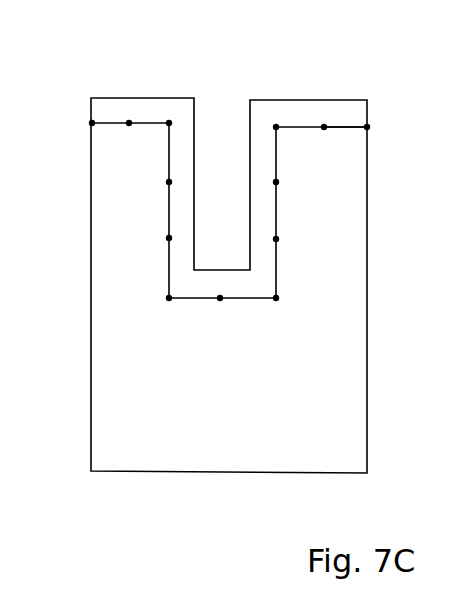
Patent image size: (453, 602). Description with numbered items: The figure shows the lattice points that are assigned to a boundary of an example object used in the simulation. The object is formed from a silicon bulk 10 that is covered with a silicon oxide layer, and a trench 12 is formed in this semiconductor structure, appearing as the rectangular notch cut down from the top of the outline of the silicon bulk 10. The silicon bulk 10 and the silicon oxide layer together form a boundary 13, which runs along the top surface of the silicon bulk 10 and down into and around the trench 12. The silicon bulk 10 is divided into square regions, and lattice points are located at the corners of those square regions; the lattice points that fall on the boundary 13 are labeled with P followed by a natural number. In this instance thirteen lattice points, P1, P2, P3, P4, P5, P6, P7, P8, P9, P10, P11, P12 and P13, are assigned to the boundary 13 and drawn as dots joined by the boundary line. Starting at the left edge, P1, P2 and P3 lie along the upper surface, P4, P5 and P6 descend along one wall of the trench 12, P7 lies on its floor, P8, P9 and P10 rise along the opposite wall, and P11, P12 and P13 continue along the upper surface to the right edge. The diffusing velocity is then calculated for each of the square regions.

The silicon bulk 10 is at (86, 415).
The trench 12 is at (354, 112).
The boundary 13 is at (342, 130).
The lattice point P1 is at (105, 138).
The lattice point P2 is at (130, 113).
The lattice point P3 is at (155, 138).
The lattice point P4 is at (152, 188).
The lattice point P5 is at (151, 245).
The lattice point P6 is at (151, 306).
The lattice point P7 is at (220, 311).
The lattice point P8 is at (292, 306).
The lattice point P9 is at (292, 248).
The lattice point P10 is at (304, 188).
The lattice point P11 is at (300, 139).
The lattice point P12 is at (327, 116).
The lattice point P13 is at (388, 139).